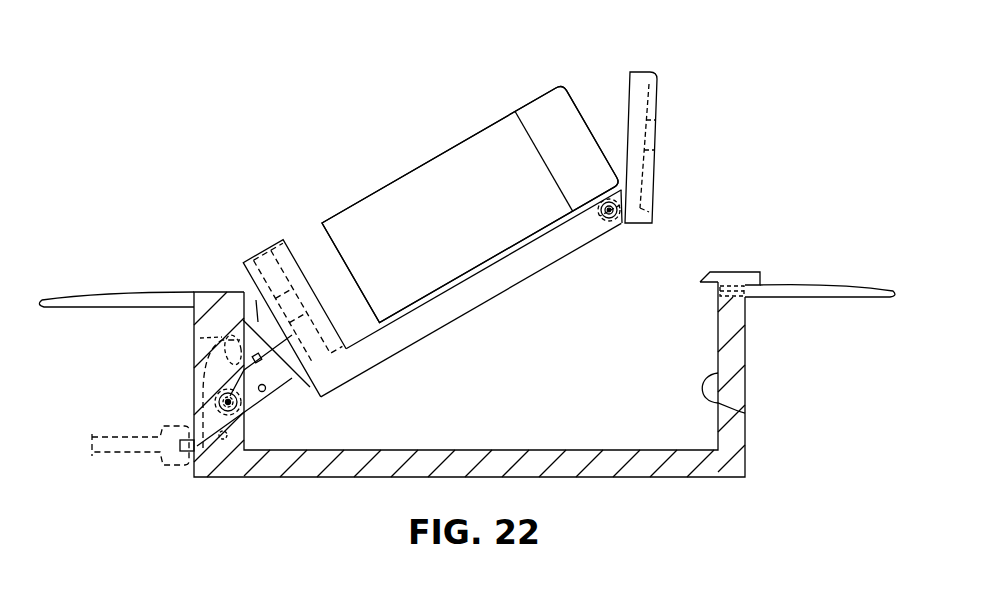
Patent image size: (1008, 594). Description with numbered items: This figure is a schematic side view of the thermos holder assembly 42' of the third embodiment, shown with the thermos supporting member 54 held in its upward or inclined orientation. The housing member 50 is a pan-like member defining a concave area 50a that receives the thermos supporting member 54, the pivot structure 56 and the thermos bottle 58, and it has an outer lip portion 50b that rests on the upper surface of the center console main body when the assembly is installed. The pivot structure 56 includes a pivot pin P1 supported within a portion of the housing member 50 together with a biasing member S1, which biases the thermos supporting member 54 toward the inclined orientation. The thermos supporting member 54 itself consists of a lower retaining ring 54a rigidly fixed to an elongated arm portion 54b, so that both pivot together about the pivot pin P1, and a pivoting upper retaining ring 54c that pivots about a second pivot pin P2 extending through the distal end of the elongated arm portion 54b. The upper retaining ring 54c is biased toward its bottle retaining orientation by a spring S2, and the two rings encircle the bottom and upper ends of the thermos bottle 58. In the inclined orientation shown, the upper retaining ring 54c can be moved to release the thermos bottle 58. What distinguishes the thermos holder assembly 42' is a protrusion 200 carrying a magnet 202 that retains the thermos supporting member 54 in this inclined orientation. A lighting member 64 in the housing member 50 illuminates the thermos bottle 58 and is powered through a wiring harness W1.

The thermos holder assembly 42' is at (471, 201).
The thermos bottle 58 is at (458, 176).
The thermos supporting member 54 is at (545, 270).
The lower retaining ring 54a is at (258, 268).
The elongated arm portion 54b is at (441, 308).
The pivoting upper retaining ring 54c is at (652, 84).
The housing member 50 is at (745, 344).
The concave area 50a is at (745, 413).
The outer lip portion 50b is at (815, 285).
The protrusion 200 is at (256, 300).
The magnet 202 is at (258, 362).
The lighting member 64 is at (200, 338).
The pivot structure 56 is at (248, 432).
The pivot pin P1 is at (258, 391).
The second pivot pin P2 is at (609, 218).
The biasing member S1 is at (263, 391).
The spring S2 is at (636, 222).
The wiring harness W1 is at (121, 455).